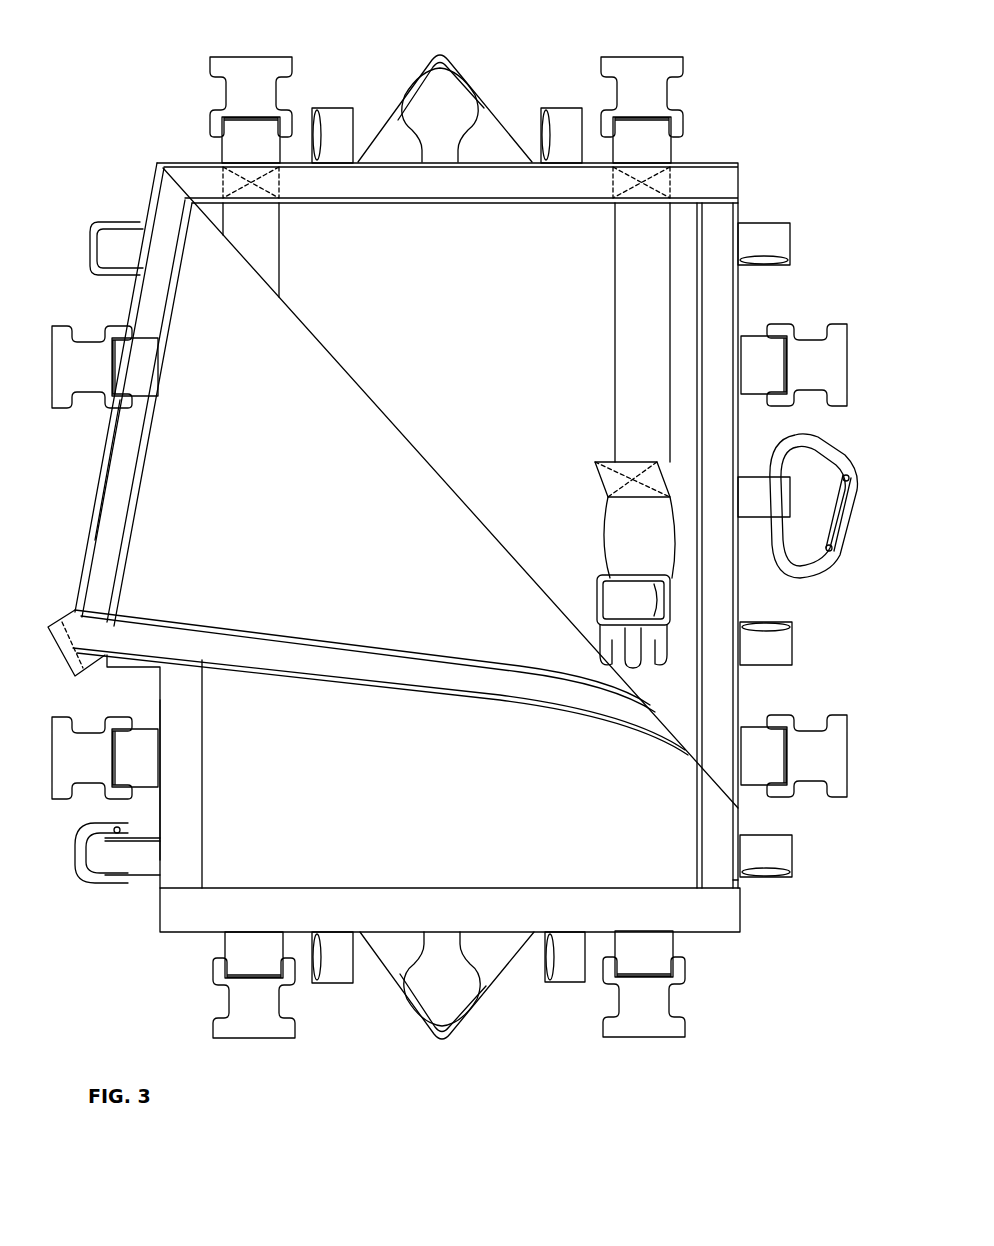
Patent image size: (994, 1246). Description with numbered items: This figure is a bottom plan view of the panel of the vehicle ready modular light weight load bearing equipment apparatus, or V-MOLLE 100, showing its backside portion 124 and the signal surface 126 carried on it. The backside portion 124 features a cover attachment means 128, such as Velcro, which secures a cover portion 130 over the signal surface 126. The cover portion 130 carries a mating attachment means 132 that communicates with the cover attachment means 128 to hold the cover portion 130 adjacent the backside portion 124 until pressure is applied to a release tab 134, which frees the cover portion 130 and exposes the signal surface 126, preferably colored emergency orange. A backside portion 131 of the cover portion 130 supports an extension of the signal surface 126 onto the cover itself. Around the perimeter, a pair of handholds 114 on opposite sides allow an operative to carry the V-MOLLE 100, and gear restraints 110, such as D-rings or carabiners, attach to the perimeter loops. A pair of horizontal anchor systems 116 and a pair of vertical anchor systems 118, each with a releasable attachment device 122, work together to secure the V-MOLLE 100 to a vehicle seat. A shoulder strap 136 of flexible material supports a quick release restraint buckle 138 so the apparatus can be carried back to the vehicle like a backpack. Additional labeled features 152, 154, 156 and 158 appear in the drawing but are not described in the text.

The vehicle ready modular light weight load bearing equipment apparatus (V-MOLLE) 100 is at (750, 67).
The gear restraints 110 is at (90, 240).
The handholds 114 is at (497, 110).
The horizontal anchor systems 116 is at (808, 801).
The vertical anchor systems 118 is at (198, 98).
The releasable attachment device 122 is at (620, 1040).
The backside portion 124 is at (740, 149).
The signal surface 126 is at (198, 527).
The cover attachment means 128 is at (290, 74).
The cover portion 130 is at (148, 185).
The backside portion of the cover portion 131 is at (186, 368).
The mating attachment means 132 is at (118, 475).
The release tab 134 is at (67, 613).
The shoulder strap 136 is at (279, 278).
The quick release restraint buckle 138 is at (598, 605).
The stitched attachment 152 is at (688, 155).
The bottom edge 154 is at (204, 936).
The left side edge 156 is at (156, 680).
The corner 158 is at (744, 890).